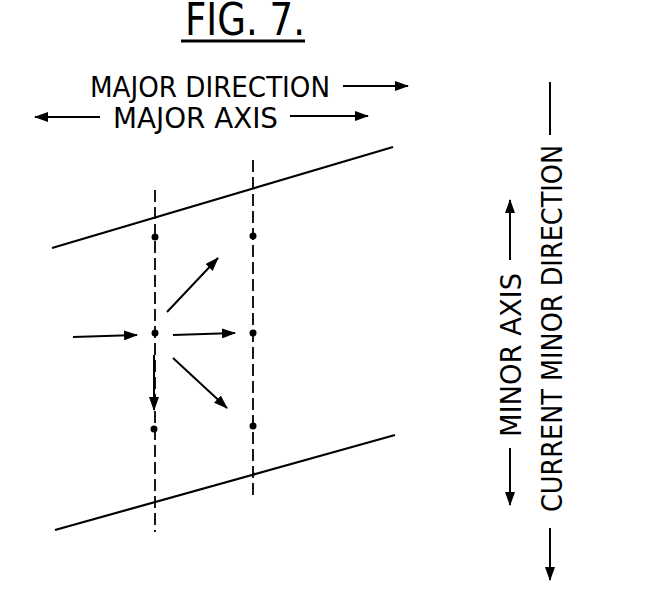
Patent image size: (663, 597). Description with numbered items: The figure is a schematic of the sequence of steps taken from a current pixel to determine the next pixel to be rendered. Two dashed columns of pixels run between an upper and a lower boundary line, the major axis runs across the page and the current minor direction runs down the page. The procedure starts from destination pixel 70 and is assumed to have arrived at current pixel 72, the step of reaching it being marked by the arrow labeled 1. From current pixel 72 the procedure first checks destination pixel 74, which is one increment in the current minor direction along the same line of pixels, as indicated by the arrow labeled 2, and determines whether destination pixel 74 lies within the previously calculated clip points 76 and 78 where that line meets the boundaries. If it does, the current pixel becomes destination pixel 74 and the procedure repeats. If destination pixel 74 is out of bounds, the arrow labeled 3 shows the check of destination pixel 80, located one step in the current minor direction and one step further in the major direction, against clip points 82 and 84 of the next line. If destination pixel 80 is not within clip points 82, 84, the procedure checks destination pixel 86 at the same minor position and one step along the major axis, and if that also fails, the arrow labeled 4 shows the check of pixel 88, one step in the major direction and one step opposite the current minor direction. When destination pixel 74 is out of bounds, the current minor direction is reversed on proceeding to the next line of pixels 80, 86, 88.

The destination pixel 70 is at (155, 237).
The current pixel 72 is at (153, 332).
The destination pixel 74 is at (152, 430).
The clip point 76 is at (157, 218).
The clip point 78 is at (156, 503).
The destination pixel 80 is at (256, 424).
The clip point 82 is at (257, 187).
The clip point 84 is at (255, 474).
The destination pixel 86 is at (256, 332).
The pixel 88 is at (257, 236).
The step 1 arrow 1 is at (105, 361).
The step 2 arrow 2 is at (170, 384).
The step 3 arrow 3 is at (204, 354).
The step 4 arrow 4 is at (192, 291).